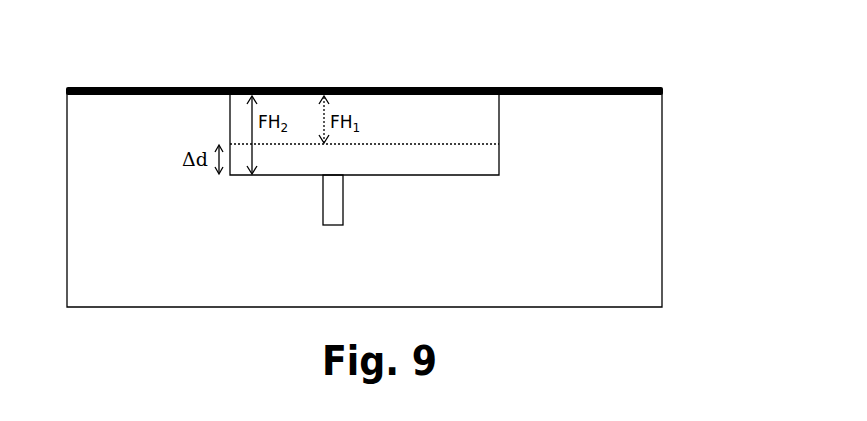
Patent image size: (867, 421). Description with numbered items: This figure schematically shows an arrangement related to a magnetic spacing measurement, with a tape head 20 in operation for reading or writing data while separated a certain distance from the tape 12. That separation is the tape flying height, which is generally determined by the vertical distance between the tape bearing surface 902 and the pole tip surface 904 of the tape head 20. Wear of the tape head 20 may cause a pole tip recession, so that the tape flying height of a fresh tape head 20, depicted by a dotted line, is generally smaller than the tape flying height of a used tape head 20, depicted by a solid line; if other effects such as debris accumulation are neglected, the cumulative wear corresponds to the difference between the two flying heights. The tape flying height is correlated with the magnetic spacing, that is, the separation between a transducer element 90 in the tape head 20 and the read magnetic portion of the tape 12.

The tape 12 is at (575, 87).
The tape head 20 is at (558, 307).
The transducer element 90 is at (335, 226).
The tape bearing surface 902 is at (178, 96).
The pole tip surface 904 is at (473, 176).